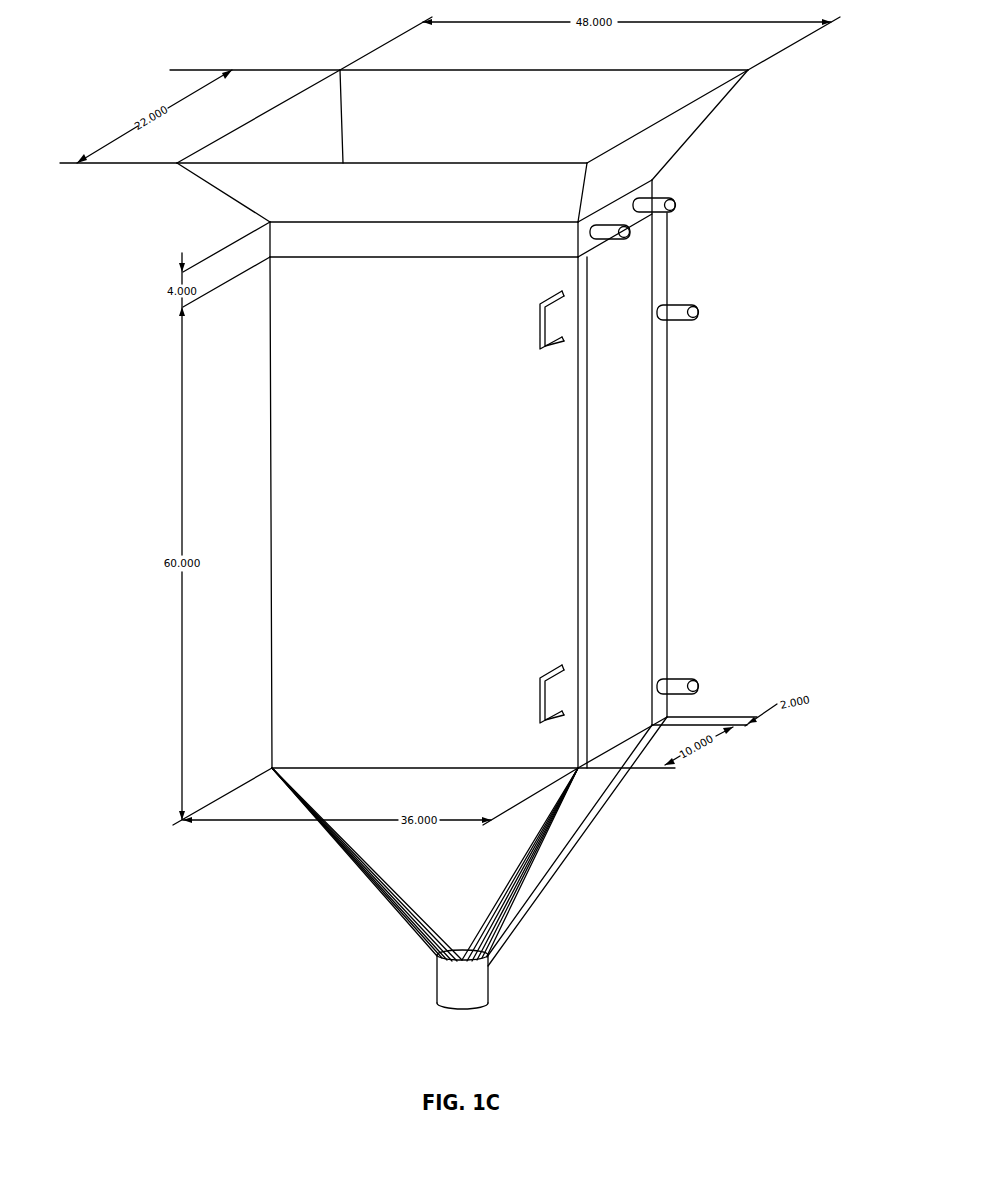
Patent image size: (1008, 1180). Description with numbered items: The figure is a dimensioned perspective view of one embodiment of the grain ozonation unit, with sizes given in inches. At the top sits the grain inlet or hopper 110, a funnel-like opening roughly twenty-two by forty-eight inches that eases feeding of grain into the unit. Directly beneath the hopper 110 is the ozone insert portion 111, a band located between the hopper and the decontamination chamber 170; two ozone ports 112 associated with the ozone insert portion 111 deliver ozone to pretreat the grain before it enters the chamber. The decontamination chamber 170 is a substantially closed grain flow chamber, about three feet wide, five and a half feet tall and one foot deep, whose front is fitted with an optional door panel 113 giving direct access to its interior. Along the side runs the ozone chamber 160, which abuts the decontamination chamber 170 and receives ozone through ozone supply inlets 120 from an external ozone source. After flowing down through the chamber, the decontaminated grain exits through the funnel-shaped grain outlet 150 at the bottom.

The grain inlet hopper 110 is at (658, 142).
The ozone insert portion 111 is at (277, 243).
The ozone port 112 is at (627, 236).
The door panel 113 is at (538, 363).
The ozone supply inlet 120 is at (693, 680).
The grain outlet 150 is at (473, 983).
The ozone chamber 160 is at (660, 392).
The decontamination chamber 170 is at (628, 590).